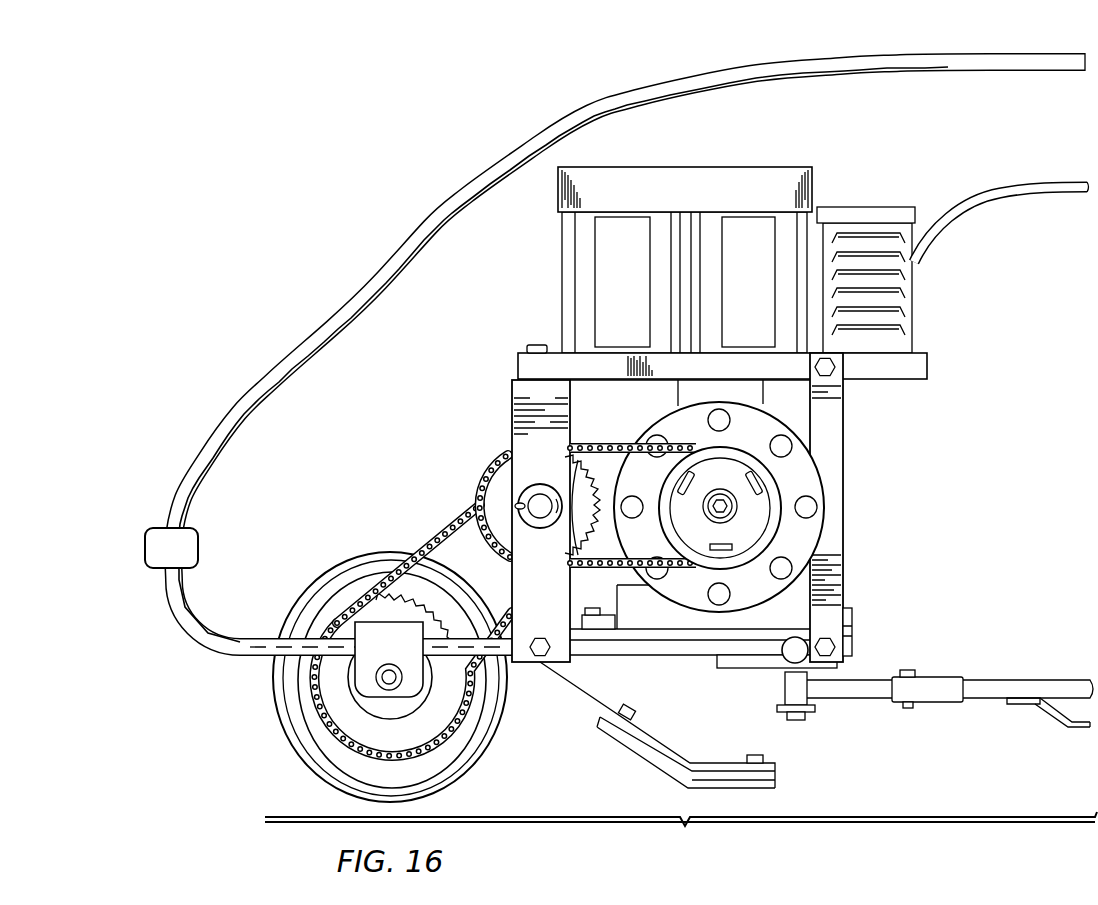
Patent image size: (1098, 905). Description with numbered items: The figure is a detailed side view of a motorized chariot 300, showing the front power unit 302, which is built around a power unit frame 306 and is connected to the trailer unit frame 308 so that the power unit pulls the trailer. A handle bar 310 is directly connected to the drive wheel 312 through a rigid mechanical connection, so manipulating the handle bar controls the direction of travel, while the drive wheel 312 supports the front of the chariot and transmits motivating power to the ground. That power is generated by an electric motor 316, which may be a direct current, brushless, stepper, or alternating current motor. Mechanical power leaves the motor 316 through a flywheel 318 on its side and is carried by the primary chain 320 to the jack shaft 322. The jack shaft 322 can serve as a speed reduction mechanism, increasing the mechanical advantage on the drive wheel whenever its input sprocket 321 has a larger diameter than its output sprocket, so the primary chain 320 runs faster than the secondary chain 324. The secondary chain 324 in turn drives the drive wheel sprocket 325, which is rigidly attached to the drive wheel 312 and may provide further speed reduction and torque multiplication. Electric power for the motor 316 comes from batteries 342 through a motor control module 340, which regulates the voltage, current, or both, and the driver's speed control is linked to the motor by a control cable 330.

The motorized chariot 300 is at (186, 284).
The power unit 302 is at (681, 832).
The power unit frame 306 is at (667, 657).
The trailer unit frame 308 is at (1022, 680).
The handle bar 310 is at (469, 185).
The drive wheel 312 is at (272, 695).
The electric motor 316 is at (795, 462).
The flywheel 318 is at (752, 523).
The primary chain 320 is at (600, 445).
The input sprocket 321 is at (489, 500).
The jack shaft 322 is at (540, 492).
The secondary chain 324 is at (442, 538).
The drive wheel sprocket 325 is at (347, 712).
The control cable 330 is at (1022, 182).
The motor control module 340 is at (866, 207).
The batteries 342 is at (685, 165).